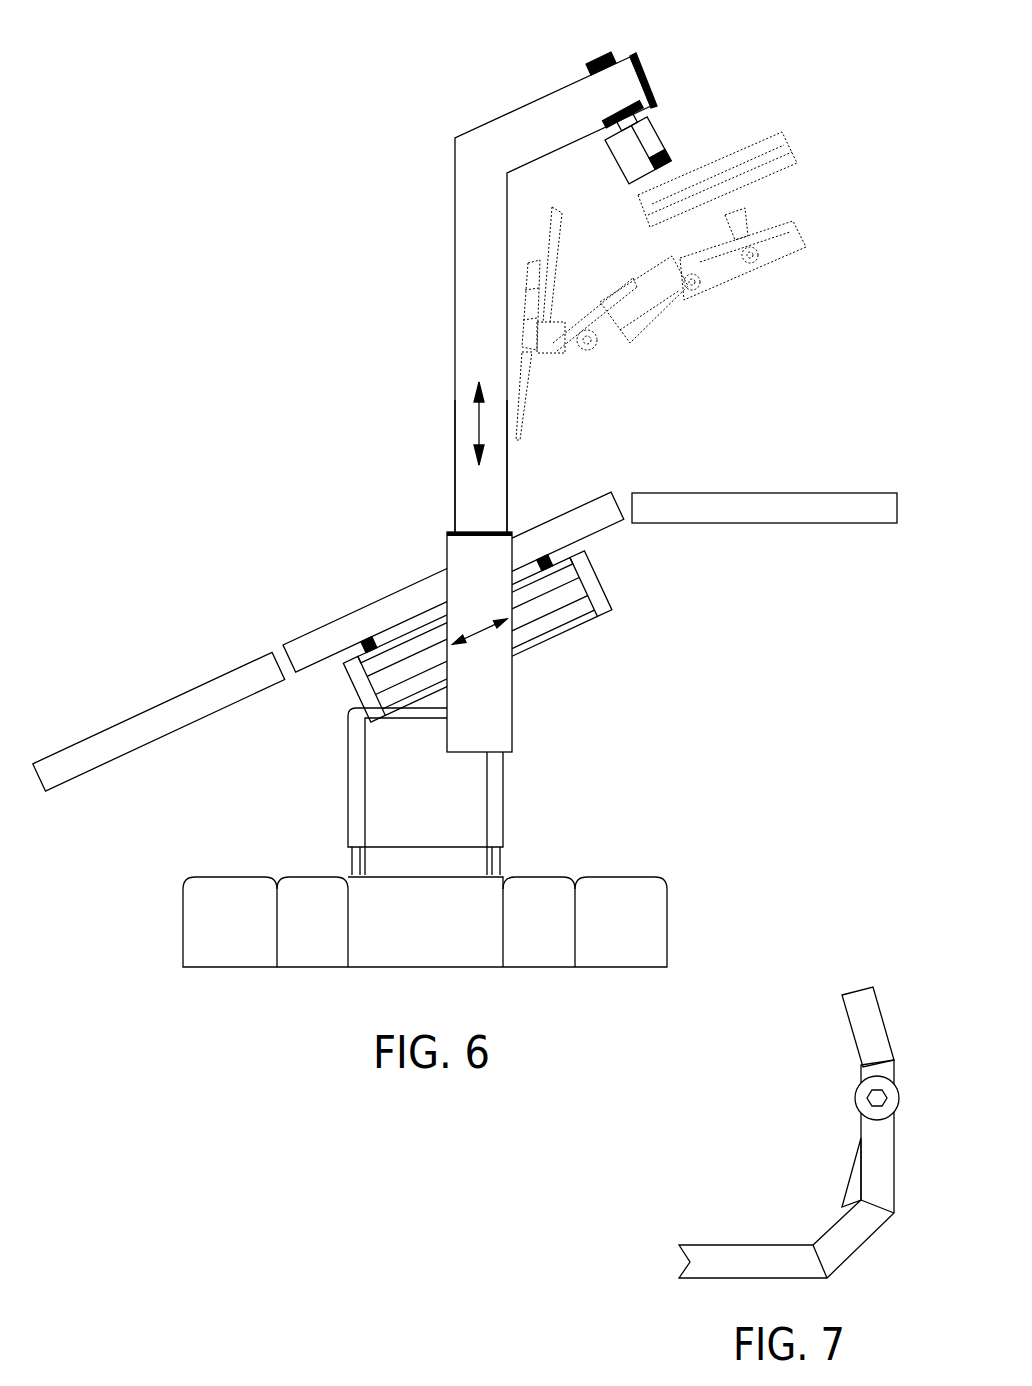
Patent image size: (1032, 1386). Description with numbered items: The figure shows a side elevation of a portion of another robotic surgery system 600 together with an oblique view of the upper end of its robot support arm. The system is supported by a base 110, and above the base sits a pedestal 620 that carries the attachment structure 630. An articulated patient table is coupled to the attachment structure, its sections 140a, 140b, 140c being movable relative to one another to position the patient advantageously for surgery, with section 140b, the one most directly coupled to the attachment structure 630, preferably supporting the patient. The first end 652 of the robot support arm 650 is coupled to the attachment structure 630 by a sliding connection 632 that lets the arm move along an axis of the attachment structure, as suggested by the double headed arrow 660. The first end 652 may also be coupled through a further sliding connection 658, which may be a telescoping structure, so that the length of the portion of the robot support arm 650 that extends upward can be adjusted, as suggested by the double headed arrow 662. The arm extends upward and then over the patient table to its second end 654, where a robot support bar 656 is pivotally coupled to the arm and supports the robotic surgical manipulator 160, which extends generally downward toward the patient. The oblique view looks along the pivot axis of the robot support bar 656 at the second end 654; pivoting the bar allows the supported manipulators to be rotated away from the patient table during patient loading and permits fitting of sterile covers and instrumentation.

In FIG. 6, the base 110 is at (228, 875).
In FIG. 6, the patient table section 140a is at (159, 721).
In FIG. 6, the patient table section 140b is at (453, 582).
In FIG. 6, the patient table section 140c is at (764, 492).
In FIG. 6, the robotic surgical manipulator 160 is at (814, 96).
In FIG. 6, the robotic surgery system 600 is at (198, 344).
In FIG. 6, the pedestal 620 is at (347, 823).
In FIG. 6, the attachment structure 630 is at (475, 631).
In FIG. 6, the sliding connection 632 is at (482, 645).
In FIG. 6, the robot support arm 650 is at (455, 327).
In FIG. 6, the first end of robot support arm 652 is at (455, 510).
In FIG. 6, the second end of robot support arm 654 is at (643, 80).
In FIG. 7, the second end of robot support arm 654 is at (855, 1102).
In FIG. 6, the robot support bar 656 is at (673, 138).
In FIG. 7, the robot support bar 656 is at (847, 1030).
In FIG. 6, the sliding connection 658 is at (448, 548).
In FIG. 6, the double headed arrow 660 is at (468, 633).
In FIG. 6, the double headed arrow 662 is at (478, 432).